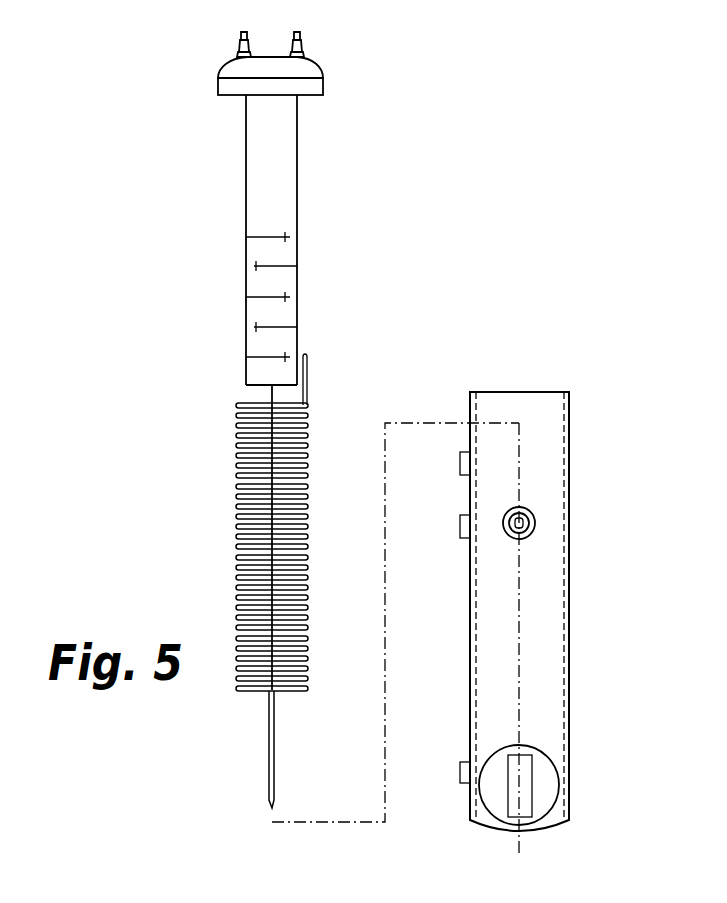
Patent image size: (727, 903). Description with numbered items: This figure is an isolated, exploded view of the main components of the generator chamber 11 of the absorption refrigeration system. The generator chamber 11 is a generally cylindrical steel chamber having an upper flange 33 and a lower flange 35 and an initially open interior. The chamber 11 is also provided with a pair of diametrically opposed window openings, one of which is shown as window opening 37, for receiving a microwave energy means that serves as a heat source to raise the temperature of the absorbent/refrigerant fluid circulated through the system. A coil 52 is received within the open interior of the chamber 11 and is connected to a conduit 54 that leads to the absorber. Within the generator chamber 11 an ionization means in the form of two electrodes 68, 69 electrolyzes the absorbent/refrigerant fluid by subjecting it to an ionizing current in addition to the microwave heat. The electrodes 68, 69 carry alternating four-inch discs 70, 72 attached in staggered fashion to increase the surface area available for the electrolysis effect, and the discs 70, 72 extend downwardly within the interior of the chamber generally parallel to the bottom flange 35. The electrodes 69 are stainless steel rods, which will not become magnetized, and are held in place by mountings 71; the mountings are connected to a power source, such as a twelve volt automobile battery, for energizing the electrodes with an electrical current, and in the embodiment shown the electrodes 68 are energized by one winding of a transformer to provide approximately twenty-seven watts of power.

The generator chamber 11 is at (570, 448).
The upper flange 33 is at (323, 68).
The lower flange 35 is at (545, 825).
The window opening 37 is at (530, 787).
The coil 52 is at (236, 543).
The conduit 54 is at (308, 368).
The electrode 68 is at (246, 152).
The electrode 69 is at (297, 148).
The disc 70 is at (246, 236).
The mounting 71 is at (301, 35).
The disc 72 is at (297, 258).